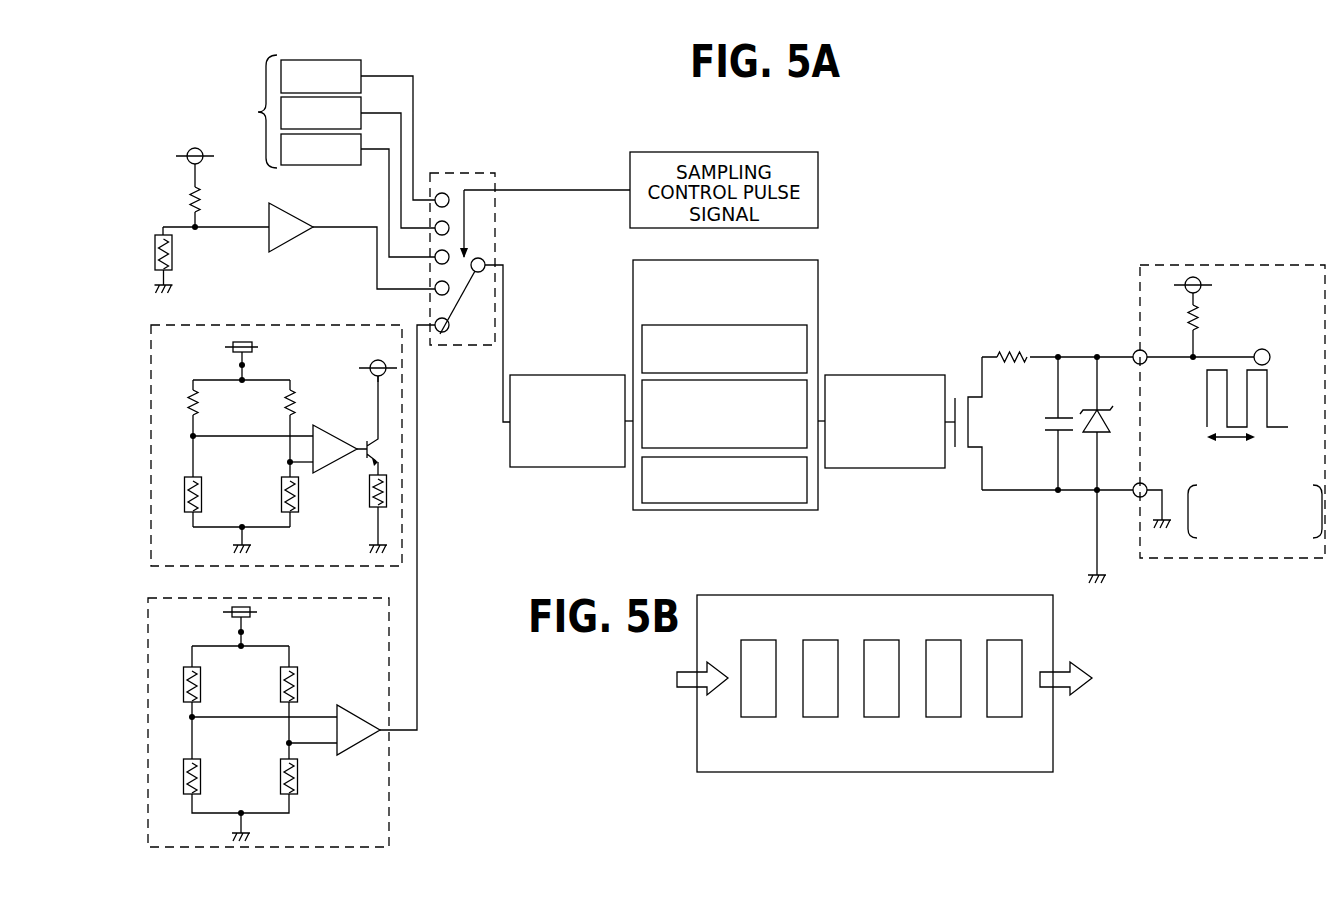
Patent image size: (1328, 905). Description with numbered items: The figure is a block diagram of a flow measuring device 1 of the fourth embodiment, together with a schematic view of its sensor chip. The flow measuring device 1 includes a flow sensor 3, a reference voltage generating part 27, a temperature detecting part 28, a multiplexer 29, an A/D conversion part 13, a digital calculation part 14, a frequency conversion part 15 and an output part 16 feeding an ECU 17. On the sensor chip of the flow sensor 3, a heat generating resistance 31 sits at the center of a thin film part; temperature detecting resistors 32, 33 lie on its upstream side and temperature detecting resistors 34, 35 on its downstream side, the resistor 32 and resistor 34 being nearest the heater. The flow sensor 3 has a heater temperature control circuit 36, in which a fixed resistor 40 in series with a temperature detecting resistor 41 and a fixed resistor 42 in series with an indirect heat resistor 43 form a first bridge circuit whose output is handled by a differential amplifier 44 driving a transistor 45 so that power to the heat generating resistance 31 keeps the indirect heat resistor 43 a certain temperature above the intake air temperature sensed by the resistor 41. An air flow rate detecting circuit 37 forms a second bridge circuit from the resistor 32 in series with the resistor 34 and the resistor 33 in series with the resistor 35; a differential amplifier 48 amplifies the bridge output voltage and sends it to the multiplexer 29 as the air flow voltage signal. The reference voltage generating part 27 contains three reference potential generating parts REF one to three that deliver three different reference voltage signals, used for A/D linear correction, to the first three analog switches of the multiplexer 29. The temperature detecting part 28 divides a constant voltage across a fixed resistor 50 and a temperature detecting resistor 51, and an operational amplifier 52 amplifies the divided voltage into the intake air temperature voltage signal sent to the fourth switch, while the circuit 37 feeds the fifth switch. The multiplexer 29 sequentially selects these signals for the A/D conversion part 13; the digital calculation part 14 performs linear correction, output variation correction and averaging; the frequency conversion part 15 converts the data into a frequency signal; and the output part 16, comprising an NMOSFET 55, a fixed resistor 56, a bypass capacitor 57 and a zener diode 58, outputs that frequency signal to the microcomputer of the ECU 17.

In FIG. 5A, the flow measuring device 1 is at (963, 178).
In FIG. 5A, the flow sensor 3 is at (305, 726).
In FIG. 5B, the flow sensor 3 is at (884, 718).
In FIG. 5A, the A/D conversion part 13 is at (566, 375).
In FIG. 5A, the digital calculation part 14 is at (818, 322).
In FIG. 5A, the frequency conversion part 15 is at (892, 375).
In FIG. 5A, the output part 16 is at (983, 337).
In FIG. 5A, the ECU 17 is at (1275, 265).
In FIG. 5A, the reference voltage generating part 27 is at (294, 111).
In FIG. 5A, the temperature detecting part 28 is at (163, 157).
In FIG. 5A, the multiplexer 29 is at (463, 173).
In FIG. 5A, the heat generating resistance 31 is at (370, 490).
In FIG. 5B, the heat generating resistance 31 is at (881, 717).
In FIG. 5A, the temperature detecting resistor 32 is at (186, 775).
In FIG. 5B, the temperature detecting resistor 32 is at (820, 717).
In FIG. 5A, the temperature detecting resistor 33 is at (297, 680).
In FIG. 5B, the temperature detecting resistor 33 is at (758, 717).
In FIG. 5A, the temperature detecting resistor 34 is at (186, 680).
In FIG. 5B, the temperature detecting resistor 34 is at (943, 717).
In FIG. 5A, the temperature detecting resistor 35 is at (297, 775).
In FIG. 5B, the temperature detecting resistor 35 is at (1004, 717).
In FIG. 5A, the heater temperature control circuit 36 is at (300, 325).
In FIG. 5A, the air flow rate detecting circuit 37 is at (389, 762).
In FIG. 5A, the fixed resistor 40 is at (190, 400).
In FIG. 5A, the temperature detecting resistor 41 is at (187, 500).
In FIG. 5A, the fixed resistor 42 is at (294, 400).
In FIG. 5A, the indirect heat resistor 43 is at (297, 500).
In FIG. 5A, the differential amplifier 44 is at (334, 432).
In FIG. 5A, the transistor 45 is at (372, 448).
In FIG. 5A, the differential amplifier 48 is at (354, 713).
In FIG. 5A, the fixed resistor 50 is at (203, 194).
In FIG. 5A, the temperature detecting resistor 51 is at (177, 252).
In FIG. 5A, the operational amplifier 52 is at (292, 213).
In FIG. 5A, the NMOSFET 55 is at (968, 450).
In FIG. 5A, the fixed resistor 56 is at (1027, 352).
In FIG. 5A, the bypass capacitor 57 is at (1052, 432).
In FIG. 5A, the zener diode 58 is at (1106, 410).